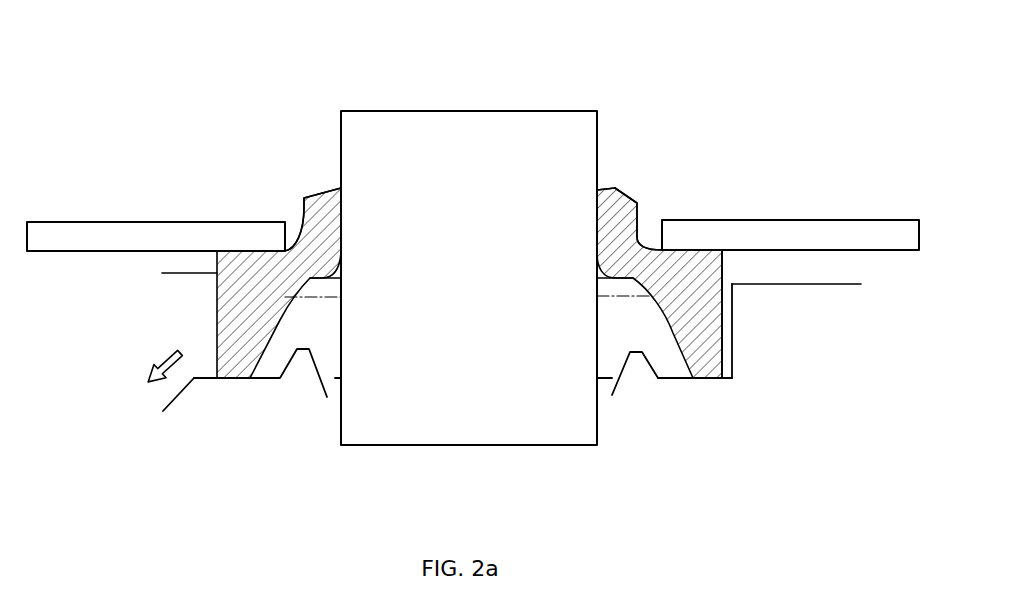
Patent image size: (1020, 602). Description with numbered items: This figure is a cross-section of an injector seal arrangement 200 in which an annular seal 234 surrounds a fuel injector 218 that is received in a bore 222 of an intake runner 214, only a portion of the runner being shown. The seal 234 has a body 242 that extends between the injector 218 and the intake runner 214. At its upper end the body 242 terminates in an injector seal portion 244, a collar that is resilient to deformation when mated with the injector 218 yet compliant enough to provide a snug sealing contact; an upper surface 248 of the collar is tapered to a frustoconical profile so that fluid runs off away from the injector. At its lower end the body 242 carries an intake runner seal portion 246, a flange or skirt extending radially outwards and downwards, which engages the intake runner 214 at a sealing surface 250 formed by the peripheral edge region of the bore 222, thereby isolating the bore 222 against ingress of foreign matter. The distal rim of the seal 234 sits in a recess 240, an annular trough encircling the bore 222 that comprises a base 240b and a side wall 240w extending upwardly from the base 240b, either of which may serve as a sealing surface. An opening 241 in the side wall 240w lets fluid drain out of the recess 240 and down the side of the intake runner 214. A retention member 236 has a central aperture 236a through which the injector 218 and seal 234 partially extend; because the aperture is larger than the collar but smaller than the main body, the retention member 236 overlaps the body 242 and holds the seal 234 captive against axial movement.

The injector seal arrangement 200 is at (247, 80).
The intake runner 214 is at (681, 439).
The injector 218 is at (451, 297).
The bore 222 is at (335, 400).
The seal 234 is at (719, 342).
The retention member 236 is at (258, 242).
The central aperture 236a is at (287, 246).
The recess 240 is at (270, 355).
The base 240b is at (677, 382).
The side wall 240w is at (732, 302).
The opening 241 is at (165, 403).
The body 242 is at (642, 270).
The injector seal portion 244 is at (622, 208).
The intake runner seal portion 246 is at (596, 195).
The upper surface 248 is at (603, 187).
The sealing surface 250 is at (717, 382).